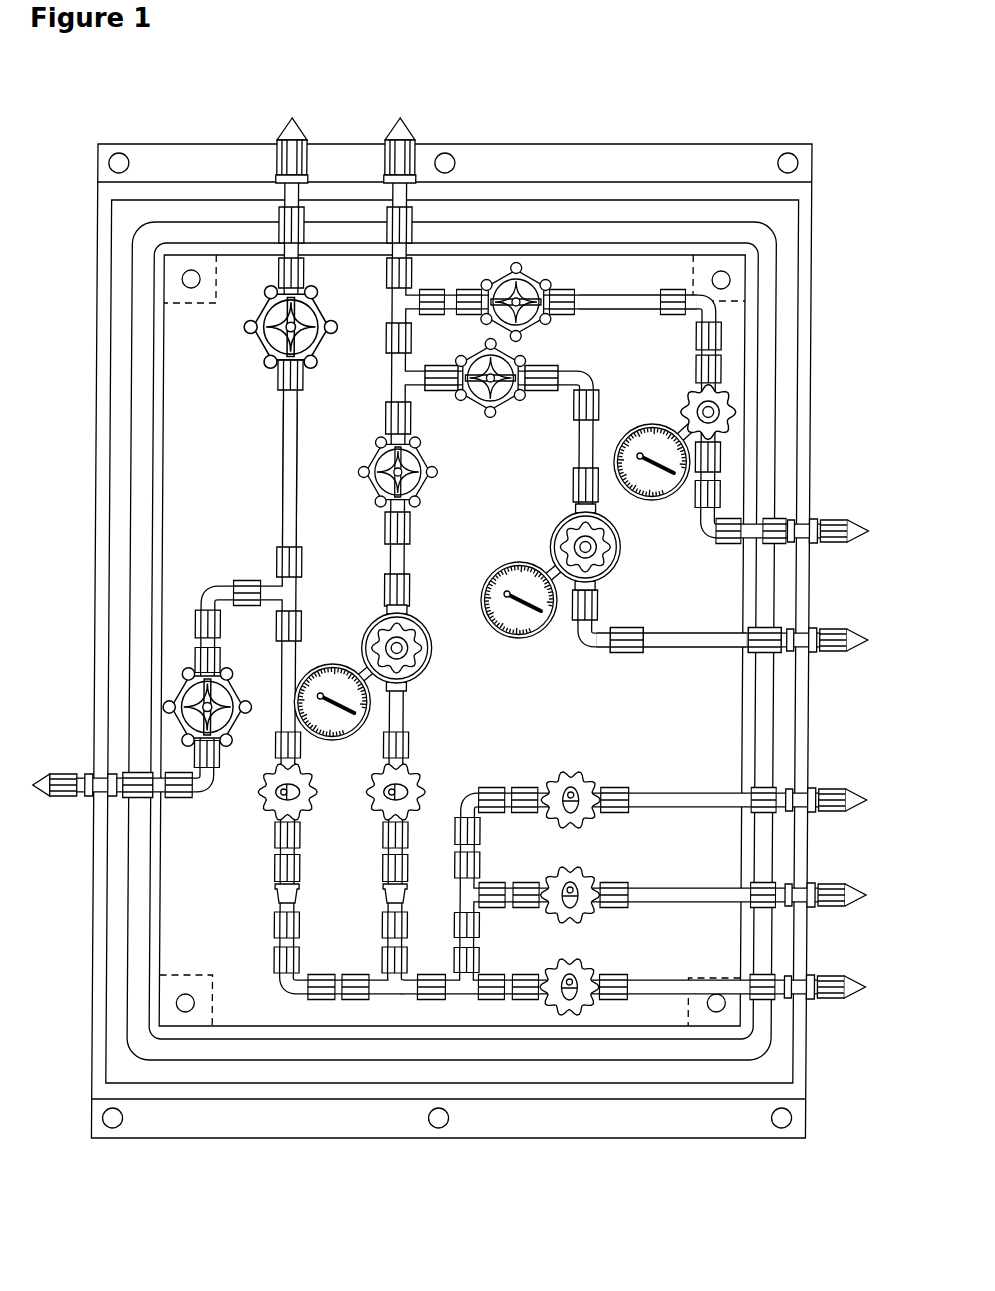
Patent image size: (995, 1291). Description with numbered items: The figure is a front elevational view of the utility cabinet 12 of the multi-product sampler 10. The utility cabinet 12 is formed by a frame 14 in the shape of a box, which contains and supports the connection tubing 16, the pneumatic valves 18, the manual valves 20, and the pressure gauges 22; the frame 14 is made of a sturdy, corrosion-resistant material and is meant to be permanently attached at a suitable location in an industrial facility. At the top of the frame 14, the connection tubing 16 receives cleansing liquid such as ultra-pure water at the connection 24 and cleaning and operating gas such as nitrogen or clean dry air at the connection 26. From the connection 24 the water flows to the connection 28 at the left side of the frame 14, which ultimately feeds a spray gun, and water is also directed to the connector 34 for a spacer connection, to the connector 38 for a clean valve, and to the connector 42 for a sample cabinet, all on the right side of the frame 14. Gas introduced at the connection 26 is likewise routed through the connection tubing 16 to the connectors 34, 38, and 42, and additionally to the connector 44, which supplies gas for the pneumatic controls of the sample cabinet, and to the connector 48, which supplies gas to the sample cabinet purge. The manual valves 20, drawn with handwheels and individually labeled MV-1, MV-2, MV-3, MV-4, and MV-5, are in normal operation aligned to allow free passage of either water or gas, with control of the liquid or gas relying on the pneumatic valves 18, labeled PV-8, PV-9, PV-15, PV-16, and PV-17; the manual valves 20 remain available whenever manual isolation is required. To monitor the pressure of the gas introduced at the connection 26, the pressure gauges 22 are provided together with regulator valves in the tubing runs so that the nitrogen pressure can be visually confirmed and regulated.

The multi-product sampler 10 is at (450, 621).
The utility cabinet 12 is at (358, 119).
The frame 14 is at (688, 167).
The connection tubing 16 is at (273, 440).
The pneumatic valves 18 is at (267, 815).
The manual valves 20 is at (272, 363).
The pressure gauges 22 is at (657, 500).
The connection 24 is at (285, 130).
The connection 26 is at (405, 130).
The connection 28 is at (66, 798).
The connector 34 is at (839, 815).
The connector 38 is at (839, 910).
The connector 42 is at (843, 1002).
The connector 44 is at (838, 545).
The connector 48 is at (840, 655).
The manual valve MV-1 is at (379, 468).
The manual valve MV-2 is at (475, 374).
The manual valve MV-3 is at (566, 273).
The manual valve MV-4 is at (254, 669).
The manual valve MV-5 is at (214, 325).
The pneumatic valve PV-8 is at (414, 788).
The pneumatic valve PV-9 is at (330, 768).
The pneumatic valve PV-15 is at (570, 880).
The pneumatic valve PV-16 is at (571, 782).
The pneumatic valve PV-17 is at (571, 944).